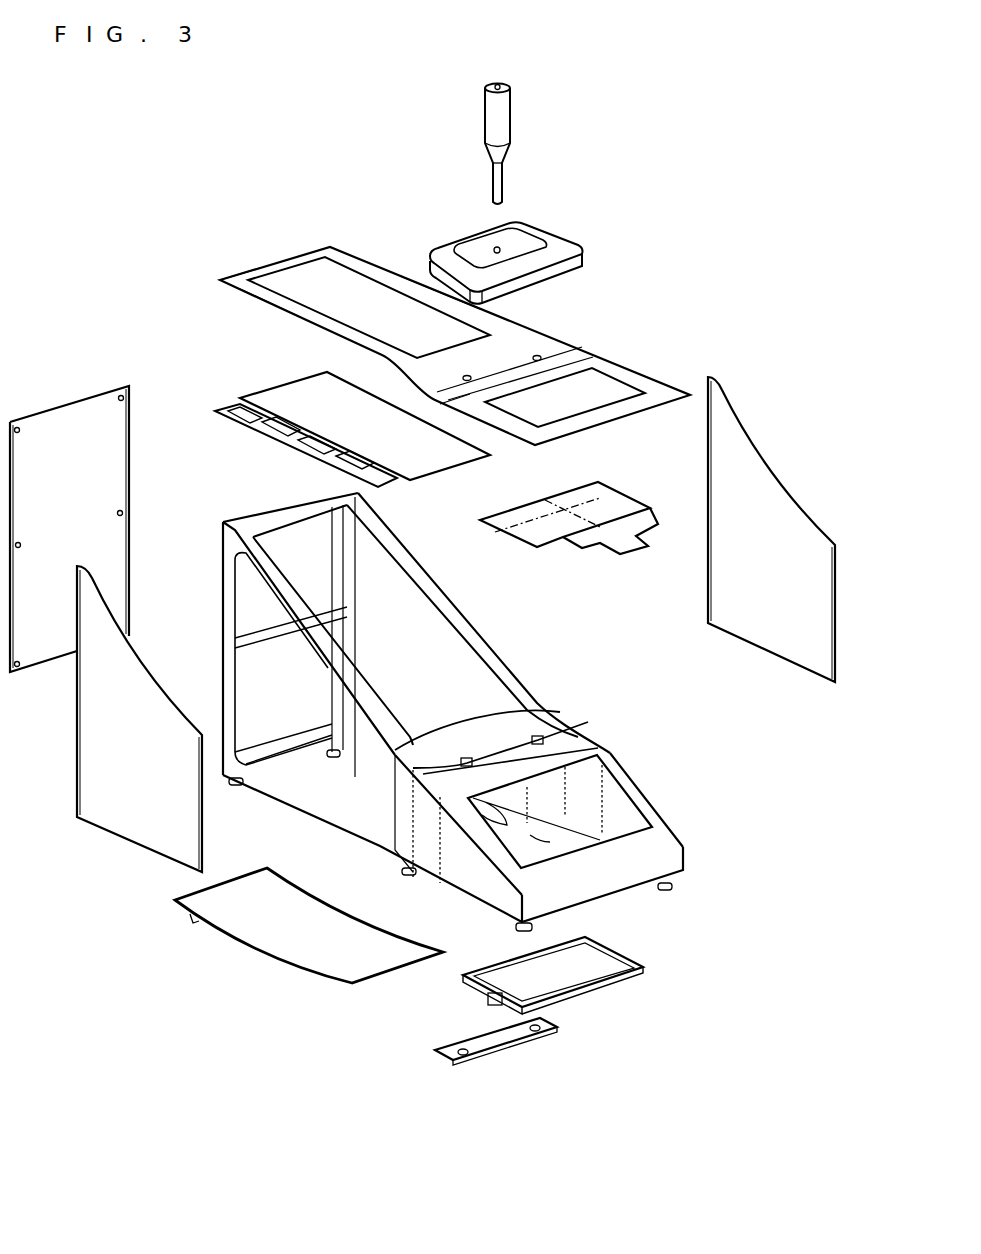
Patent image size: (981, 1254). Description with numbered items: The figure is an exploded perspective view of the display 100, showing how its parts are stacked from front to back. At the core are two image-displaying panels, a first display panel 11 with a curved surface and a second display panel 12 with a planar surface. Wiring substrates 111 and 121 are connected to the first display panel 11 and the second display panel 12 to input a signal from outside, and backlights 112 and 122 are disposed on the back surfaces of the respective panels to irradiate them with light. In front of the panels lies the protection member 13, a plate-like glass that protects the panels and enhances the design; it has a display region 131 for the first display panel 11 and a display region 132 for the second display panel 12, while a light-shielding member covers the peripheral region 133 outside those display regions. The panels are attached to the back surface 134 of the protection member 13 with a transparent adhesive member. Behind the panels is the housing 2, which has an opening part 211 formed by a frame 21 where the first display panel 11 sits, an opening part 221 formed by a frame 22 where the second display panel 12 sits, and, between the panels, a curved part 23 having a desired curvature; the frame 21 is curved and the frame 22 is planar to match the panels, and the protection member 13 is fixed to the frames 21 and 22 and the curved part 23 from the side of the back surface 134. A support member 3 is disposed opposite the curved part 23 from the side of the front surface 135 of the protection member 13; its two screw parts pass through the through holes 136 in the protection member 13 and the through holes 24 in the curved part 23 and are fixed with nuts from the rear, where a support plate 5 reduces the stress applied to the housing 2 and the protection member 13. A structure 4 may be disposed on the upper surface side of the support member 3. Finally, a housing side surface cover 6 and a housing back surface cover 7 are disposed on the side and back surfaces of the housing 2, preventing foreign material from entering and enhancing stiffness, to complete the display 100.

The display 100 is at (140, 1005).
The housing 2 is at (630, 880).
The frame 21 is at (416, 616).
The opening part 211 is at (290, 540).
The frame 22 is at (547, 750).
The opening part 221 is at (605, 797).
The curved part 23 is at (615, 738).
The through holes 24 is at (468, 760).
The support member 3 is at (540, 235).
The structure 4 is at (499, 123).
The support plate 5 is at (508, 1047).
The housing side surface cover 6 is at (770, 455).
The housing back surface cover 7 is at (65, 425).
The first display panel 11 is at (326, 405).
The wiring substrate 111 is at (212, 405).
The backlight 112 is at (258, 930).
The second display panel 12 is at (580, 532).
The wiring substrate 121 is at (628, 545).
The backlight 122 is at (582, 972).
The protection member 13 is at (449, 320).
The display region 131 is at (296, 268).
The display region 132 is at (605, 382).
The peripheral region 133 is at (400, 275).
The back surface 134 is at (267, 303).
The front surface 135 is at (242, 270).
The through holes 136 is at (540, 352).